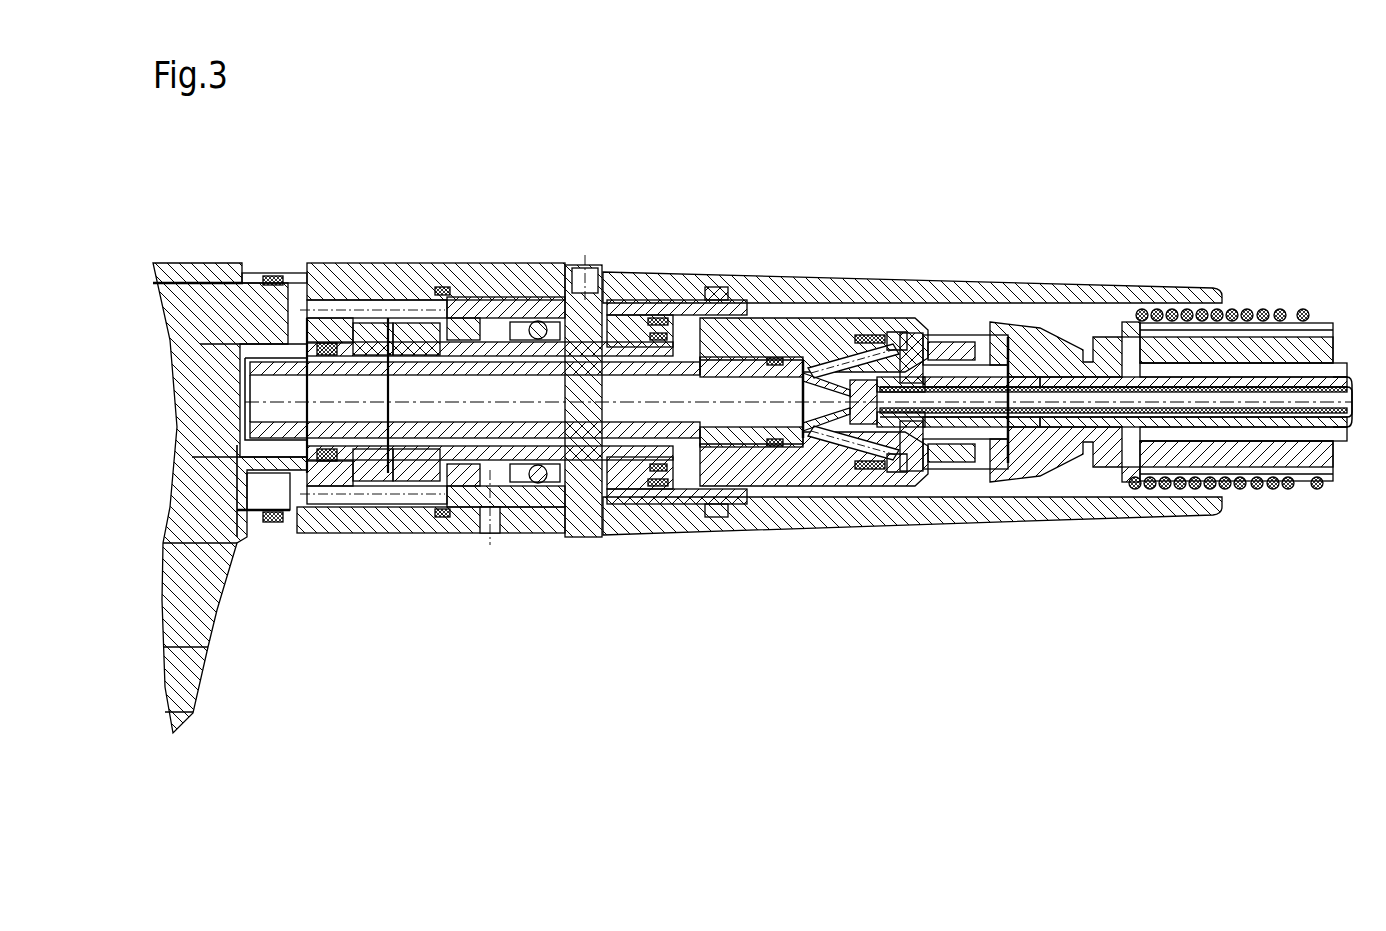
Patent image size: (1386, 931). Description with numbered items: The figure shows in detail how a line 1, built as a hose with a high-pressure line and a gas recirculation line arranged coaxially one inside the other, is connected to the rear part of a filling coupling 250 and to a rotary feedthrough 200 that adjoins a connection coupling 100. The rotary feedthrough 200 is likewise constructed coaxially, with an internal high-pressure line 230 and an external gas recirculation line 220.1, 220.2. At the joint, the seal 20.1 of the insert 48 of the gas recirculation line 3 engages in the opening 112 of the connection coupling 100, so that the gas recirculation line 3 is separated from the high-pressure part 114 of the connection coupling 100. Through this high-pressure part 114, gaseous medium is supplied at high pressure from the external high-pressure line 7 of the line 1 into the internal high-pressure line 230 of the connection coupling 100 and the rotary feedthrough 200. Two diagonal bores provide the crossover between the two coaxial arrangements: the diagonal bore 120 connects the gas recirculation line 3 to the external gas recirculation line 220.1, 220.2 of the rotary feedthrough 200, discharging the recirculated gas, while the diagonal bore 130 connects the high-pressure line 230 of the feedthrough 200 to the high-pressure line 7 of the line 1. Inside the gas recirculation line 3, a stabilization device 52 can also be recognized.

The line 1 is at (1257, 276).
The gas recirculation line 3 is at (1070, 368).
The external high-pressure line 7 is at (1245, 447).
The seal 20.1 is at (902, 500).
The insert 48 is at (997, 435).
The stabilization device 52 is at (1300, 440).
The connection coupling 100 is at (896, 209).
The opening 112 is at (885, 470).
The high-pressure part 114 is at (955, 495).
The diagonal bore 120 is at (822, 483).
The diagonal bore 130 is at (897, 323).
The rotary feedthrough 200 is at (492, 209).
The external gas recirculation line 220.1 is at (584, 530).
The external gas recirculation line 220.2 is at (331, 520).
The internal high-pressure line 230 is at (413, 473).
The filling coupling 250 is at (242, 209).